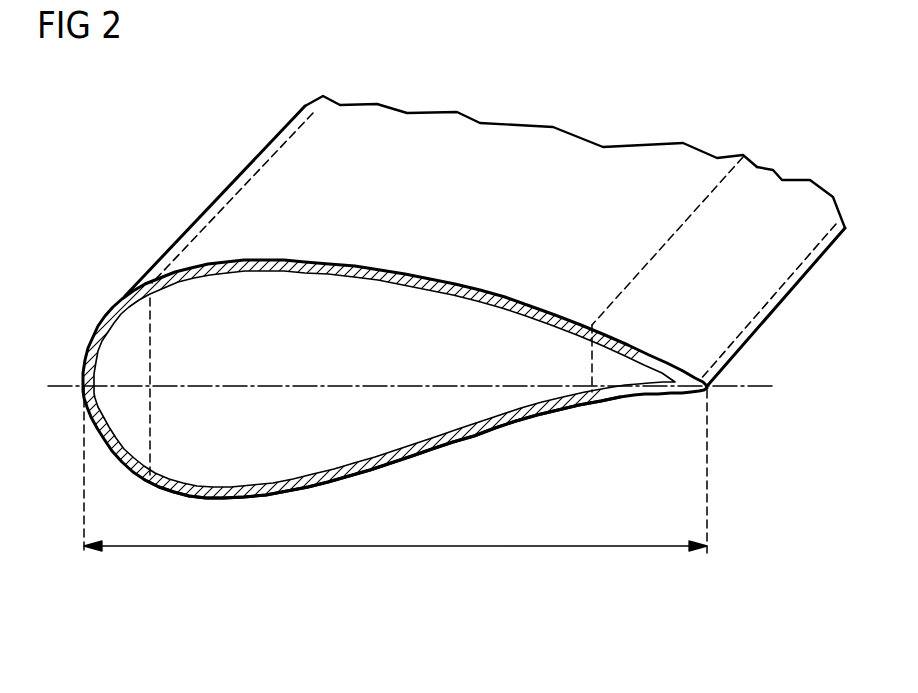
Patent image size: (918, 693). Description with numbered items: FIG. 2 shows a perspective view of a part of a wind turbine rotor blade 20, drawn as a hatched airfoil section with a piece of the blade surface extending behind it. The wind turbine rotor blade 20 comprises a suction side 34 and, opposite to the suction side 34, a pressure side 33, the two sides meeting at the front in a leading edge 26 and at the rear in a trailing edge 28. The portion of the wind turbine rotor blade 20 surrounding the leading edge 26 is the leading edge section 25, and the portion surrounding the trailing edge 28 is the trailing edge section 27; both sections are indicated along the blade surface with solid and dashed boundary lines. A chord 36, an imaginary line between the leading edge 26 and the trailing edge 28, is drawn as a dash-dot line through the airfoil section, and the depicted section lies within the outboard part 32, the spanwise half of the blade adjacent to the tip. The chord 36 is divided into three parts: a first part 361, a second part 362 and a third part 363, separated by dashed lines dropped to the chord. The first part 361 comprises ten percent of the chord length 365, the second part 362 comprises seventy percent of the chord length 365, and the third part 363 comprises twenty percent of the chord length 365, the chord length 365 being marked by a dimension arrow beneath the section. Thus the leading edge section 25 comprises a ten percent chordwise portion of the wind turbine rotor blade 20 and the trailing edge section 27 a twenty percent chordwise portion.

The wind turbine rotor blade 20 is at (140, 152).
The leading edge section 25 is at (252, 170).
The leading edge 26 is at (83, 387).
The trailing edge section 27 is at (807, 190).
The trailing edge 28 is at (782, 293).
The outboard part 32 is at (380, 268).
The pressure side 33 is at (390, 418).
The suction side 34 is at (498, 178).
The chord 36 is at (760, 390).
The first part 361 is at (130, 383).
The second part 362 is at (312, 383).
The third part 363 is at (620, 387).
The chord length 365 is at (393, 548).